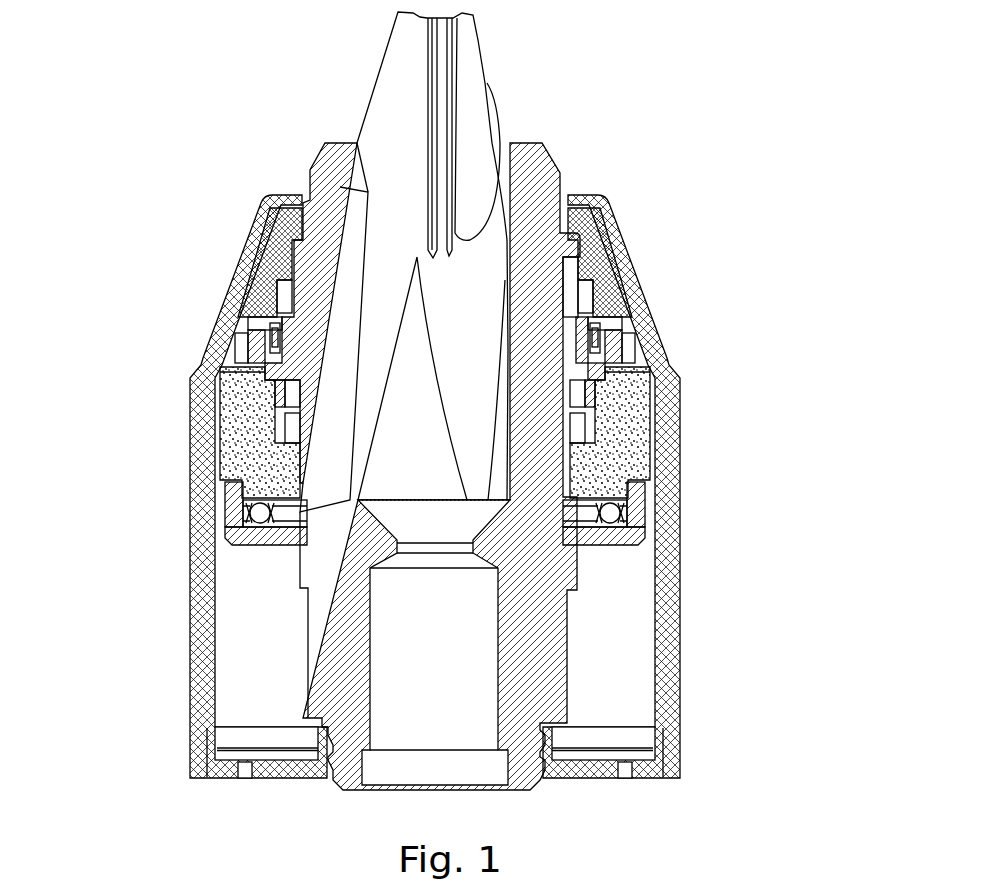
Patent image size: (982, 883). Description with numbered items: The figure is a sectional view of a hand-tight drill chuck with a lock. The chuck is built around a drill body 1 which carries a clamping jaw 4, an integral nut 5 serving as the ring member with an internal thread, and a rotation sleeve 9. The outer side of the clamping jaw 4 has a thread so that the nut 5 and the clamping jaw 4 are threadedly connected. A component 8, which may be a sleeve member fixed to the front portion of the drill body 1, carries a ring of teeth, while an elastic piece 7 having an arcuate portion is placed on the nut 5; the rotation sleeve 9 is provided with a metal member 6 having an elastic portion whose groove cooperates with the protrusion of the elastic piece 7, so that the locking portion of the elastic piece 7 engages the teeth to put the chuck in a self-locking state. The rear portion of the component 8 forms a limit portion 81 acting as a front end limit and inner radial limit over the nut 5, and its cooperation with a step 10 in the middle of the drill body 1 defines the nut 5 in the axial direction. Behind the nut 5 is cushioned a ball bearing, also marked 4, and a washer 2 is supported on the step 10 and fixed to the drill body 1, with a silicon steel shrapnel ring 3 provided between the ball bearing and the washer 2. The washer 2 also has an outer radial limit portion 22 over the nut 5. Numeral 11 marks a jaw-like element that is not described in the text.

The drill body 1 is at (552, 630).
The washer 2 is at (593, 537).
The silicon steel shrapnel ring 3 is at (258, 512).
The clamping jaw 4 is at (400, 118).
The nut 5 is at (597, 453).
The metal member 6 is at (620, 347).
The elastic piece 7 is at (265, 322).
The component fixed to the drill body 8 is at (585, 320).
The rotation sleeve 9 is at (590, 240).
The step 10 is at (285, 548).
The jaw 11 is at (340, 235).
The outer radial limit portion 22 is at (238, 490).
The limit portion 81 is at (262, 395).